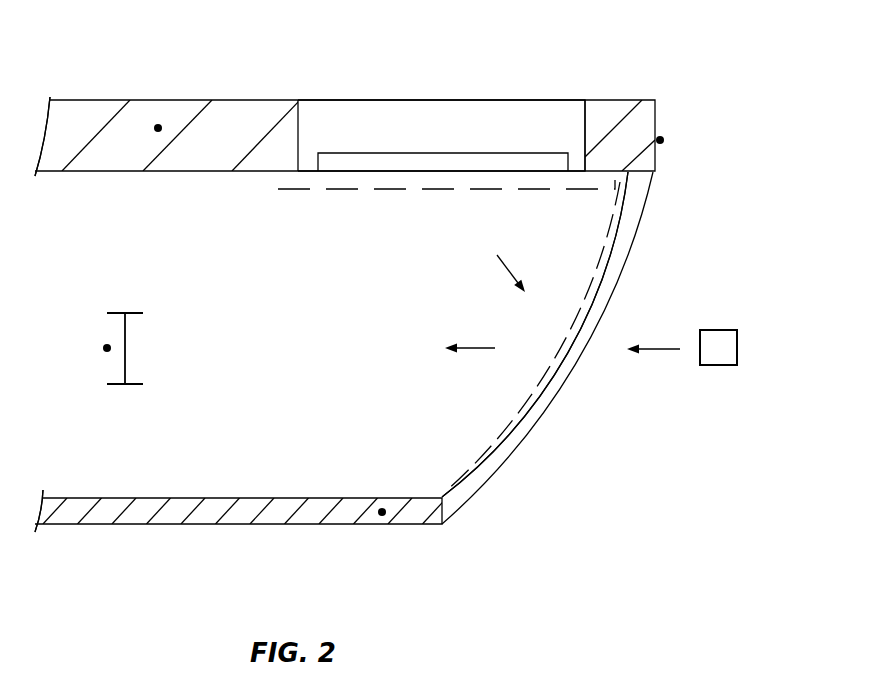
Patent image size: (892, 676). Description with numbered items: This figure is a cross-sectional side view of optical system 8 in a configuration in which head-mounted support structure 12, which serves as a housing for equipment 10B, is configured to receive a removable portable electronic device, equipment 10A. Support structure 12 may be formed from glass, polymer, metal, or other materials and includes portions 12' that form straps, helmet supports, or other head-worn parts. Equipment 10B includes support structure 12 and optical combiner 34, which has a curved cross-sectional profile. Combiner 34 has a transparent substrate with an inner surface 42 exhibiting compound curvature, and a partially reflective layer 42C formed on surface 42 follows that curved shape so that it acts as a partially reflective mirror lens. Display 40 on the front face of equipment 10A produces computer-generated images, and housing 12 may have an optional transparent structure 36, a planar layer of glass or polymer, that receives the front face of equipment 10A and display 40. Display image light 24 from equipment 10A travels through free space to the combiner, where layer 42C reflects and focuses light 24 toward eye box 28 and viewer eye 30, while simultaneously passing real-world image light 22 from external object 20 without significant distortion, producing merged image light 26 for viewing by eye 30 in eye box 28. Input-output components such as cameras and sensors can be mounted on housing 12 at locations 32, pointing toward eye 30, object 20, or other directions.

The system 8 is at (689, 71).
The equipment 10A is at (353, 112).
The equipment 10B is at (137, 68).
The support structure 12 is at (373, 319).
The portions 12' is at (74, 324).
The real-world object 20 is at (727, 366).
The real-world image light 22 is at (668, 349).
The image light 24 is at (503, 268).
The merged image light 26 is at (470, 349).
The eye box 28 is at (135, 385).
The viewer eye 30 is at (104, 348).
The locations 32 is at (158, 124).
The optical combiner 34 is at (467, 497).
The transparent structure 36 is at (342, 190).
The display 40 is at (519, 152).
The inner surface 42 is at (542, 377).
The partially reflective layer 42C is at (490, 439).